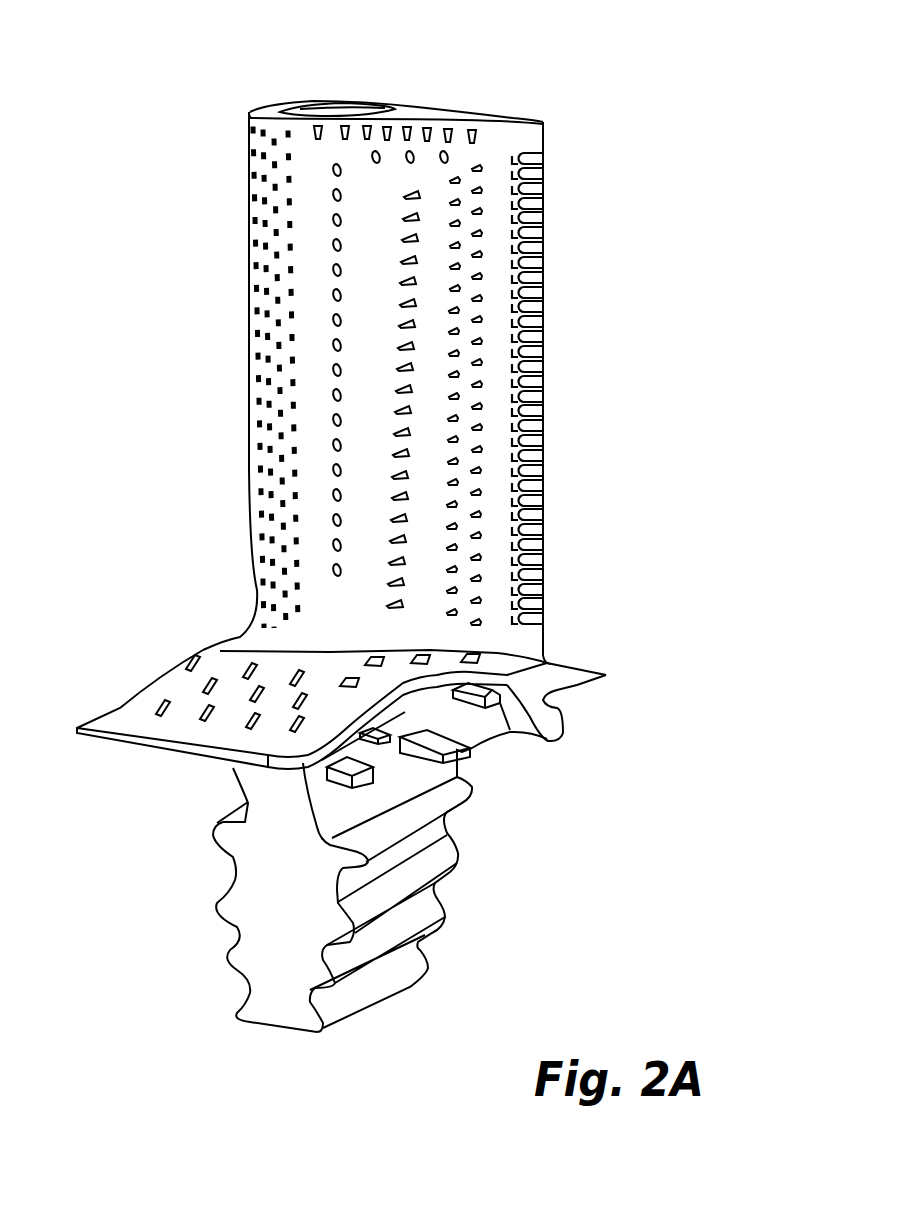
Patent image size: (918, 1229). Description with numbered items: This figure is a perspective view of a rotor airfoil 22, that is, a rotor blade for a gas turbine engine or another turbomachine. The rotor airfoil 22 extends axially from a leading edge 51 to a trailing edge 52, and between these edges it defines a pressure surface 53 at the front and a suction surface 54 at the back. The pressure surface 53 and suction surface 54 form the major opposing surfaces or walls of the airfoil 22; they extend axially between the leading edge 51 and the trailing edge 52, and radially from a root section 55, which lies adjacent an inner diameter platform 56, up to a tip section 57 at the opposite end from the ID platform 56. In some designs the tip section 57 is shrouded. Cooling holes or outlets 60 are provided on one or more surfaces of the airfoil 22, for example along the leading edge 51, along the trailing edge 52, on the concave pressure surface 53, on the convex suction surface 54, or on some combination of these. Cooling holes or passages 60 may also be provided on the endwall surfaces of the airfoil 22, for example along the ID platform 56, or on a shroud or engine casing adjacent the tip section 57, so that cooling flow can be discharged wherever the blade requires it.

The rotor airfoil 22 is at (132, 116).
The leading edge 51 is at (249, 279).
The trailing edge 52 is at (548, 397).
The pressure surface 53 is at (364, 408).
The suction surface 54 is at (493, 101).
The root section 55 is at (277, 640).
The inner diameter platform 56 is at (150, 674).
The tip section 57 is at (425, 119).
The cooling holes 60 is at (410, 232).